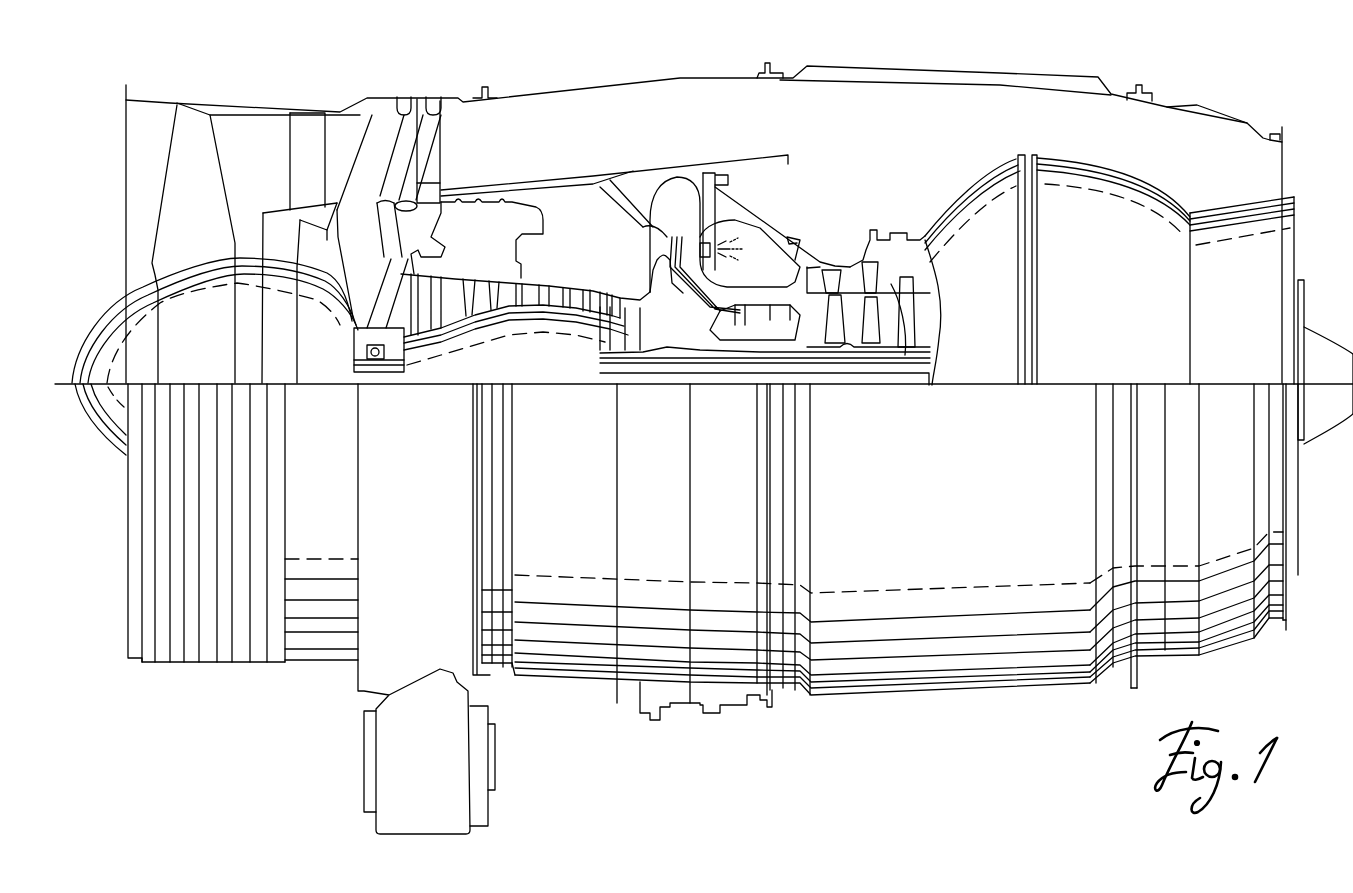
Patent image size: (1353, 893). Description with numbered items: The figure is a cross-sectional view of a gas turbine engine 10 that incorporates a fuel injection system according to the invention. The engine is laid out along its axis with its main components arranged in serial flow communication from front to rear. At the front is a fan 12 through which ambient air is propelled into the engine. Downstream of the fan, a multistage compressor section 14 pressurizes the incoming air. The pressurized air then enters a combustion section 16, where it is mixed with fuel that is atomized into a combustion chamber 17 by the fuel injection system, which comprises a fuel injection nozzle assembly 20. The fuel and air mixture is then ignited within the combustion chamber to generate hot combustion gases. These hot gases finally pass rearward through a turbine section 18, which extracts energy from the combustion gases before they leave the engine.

The gas turbine engine 10 is at (186, 715).
The fan 12 is at (152, 143).
The multistage compressor section 14 is at (527, 268).
The combustion section 16 is at (808, 217).
The combustion chamber 17 is at (768, 260).
The turbine section 18 is at (948, 203).
The fuel injection nozzle assembly 20 is at (717, 240).